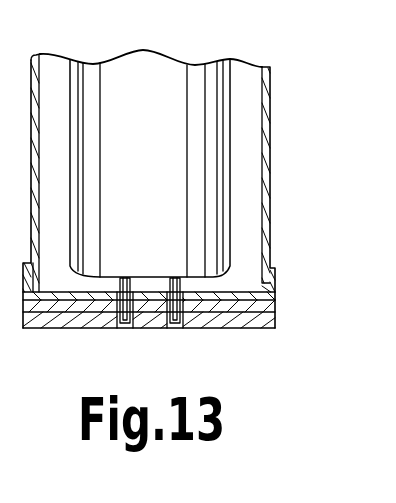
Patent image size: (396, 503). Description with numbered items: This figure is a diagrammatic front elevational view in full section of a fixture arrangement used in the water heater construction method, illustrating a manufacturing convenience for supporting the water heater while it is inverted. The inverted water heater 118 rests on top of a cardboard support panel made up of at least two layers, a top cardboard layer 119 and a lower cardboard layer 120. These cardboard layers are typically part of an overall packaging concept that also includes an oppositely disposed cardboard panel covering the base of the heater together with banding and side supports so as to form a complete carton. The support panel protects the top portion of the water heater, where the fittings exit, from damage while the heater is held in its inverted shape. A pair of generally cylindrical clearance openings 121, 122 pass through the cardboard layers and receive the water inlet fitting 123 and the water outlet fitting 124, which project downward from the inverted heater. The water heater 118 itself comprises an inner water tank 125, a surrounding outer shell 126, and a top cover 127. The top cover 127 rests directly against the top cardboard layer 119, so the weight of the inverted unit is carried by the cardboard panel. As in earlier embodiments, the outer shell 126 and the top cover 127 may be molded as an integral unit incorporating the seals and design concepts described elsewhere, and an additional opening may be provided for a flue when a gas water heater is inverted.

The inverted water heater 118 is at (302, 179).
The top cardboard layer 119 is at (277, 312).
The cardboard layer 120 is at (276, 331).
The clearance opening 121 is at (131, 330).
The clearance opening 122 is at (179, 330).
The water inlet fitting 123 is at (120, 331).
The water outlet fitting 124 is at (172, 331).
The inner water tank 125 is at (164, 68).
The outer shell 126 is at (266, 127).
The top cover 127 is at (277, 286).